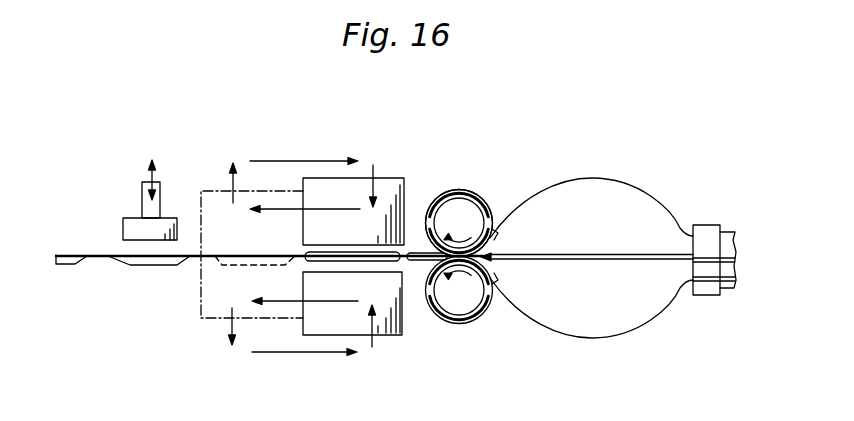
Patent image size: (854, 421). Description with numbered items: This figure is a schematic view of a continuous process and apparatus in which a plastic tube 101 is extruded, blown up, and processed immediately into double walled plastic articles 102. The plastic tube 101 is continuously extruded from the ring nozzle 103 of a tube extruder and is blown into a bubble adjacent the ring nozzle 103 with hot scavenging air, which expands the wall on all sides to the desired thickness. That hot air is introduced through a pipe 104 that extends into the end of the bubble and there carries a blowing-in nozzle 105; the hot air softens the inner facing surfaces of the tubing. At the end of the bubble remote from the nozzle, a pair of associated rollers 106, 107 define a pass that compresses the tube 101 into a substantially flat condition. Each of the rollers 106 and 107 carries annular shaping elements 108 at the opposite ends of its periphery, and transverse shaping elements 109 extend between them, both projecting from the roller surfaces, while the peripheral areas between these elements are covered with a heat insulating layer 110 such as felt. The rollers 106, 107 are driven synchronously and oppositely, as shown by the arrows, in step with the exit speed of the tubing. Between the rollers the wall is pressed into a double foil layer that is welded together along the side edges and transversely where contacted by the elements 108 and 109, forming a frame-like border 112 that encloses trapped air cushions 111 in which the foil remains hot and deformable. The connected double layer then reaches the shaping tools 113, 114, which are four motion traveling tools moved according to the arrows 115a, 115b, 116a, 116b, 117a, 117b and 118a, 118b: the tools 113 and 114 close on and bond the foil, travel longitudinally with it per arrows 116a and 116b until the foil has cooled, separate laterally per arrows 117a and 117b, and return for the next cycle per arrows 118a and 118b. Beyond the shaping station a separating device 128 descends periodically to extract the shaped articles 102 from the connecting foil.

The plastic tube 101 is at (597, 178).
The double walled plastic articles 102 is at (132, 264).
The ring nozzle 103 is at (706, 237).
The pipe 104 is at (603, 261).
The blowing-in nozzle 105 is at (492, 257).
The roller 106 is at (470, 212).
The roller 107 is at (470, 306).
The annular shaping elements 108 is at (450, 191).
The transverse shaping elements 109 is at (493, 230).
The heat insulating layer 110 is at (463, 189).
The air cushions 111 is at (306, 256).
The frame-like border 112 is at (404, 255).
The shaping tool 113 is at (362, 242).
The shaping tool 114 is at (394, 294).
The arrow 115a is at (374, 172).
The arrow 115b is at (368, 334).
The arrow 116a is at (282, 210).
The arrow 116b is at (305, 289).
The arrow 117a is at (230, 183).
The arrow 117b is at (226, 326).
The arrow 118a is at (289, 160).
The arrow 118b is at (288, 353).
The separating device 128 is at (128, 223).